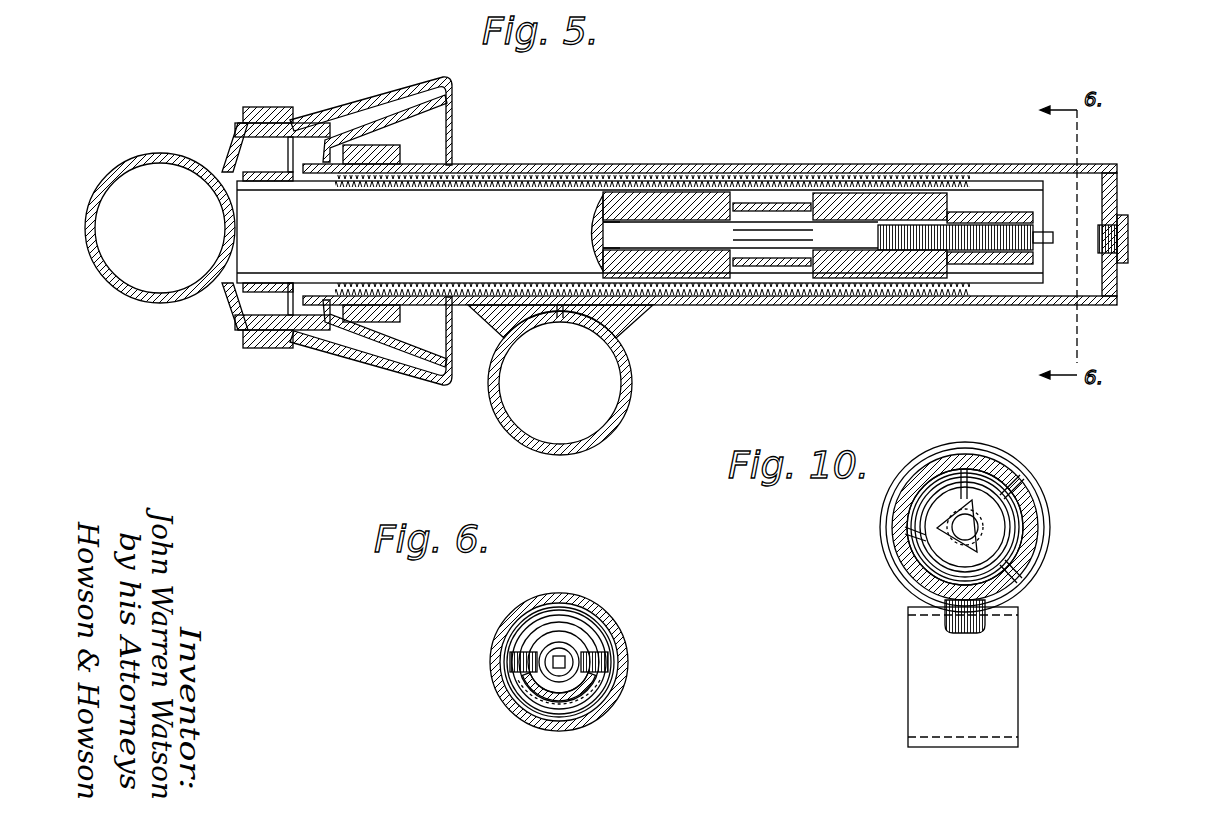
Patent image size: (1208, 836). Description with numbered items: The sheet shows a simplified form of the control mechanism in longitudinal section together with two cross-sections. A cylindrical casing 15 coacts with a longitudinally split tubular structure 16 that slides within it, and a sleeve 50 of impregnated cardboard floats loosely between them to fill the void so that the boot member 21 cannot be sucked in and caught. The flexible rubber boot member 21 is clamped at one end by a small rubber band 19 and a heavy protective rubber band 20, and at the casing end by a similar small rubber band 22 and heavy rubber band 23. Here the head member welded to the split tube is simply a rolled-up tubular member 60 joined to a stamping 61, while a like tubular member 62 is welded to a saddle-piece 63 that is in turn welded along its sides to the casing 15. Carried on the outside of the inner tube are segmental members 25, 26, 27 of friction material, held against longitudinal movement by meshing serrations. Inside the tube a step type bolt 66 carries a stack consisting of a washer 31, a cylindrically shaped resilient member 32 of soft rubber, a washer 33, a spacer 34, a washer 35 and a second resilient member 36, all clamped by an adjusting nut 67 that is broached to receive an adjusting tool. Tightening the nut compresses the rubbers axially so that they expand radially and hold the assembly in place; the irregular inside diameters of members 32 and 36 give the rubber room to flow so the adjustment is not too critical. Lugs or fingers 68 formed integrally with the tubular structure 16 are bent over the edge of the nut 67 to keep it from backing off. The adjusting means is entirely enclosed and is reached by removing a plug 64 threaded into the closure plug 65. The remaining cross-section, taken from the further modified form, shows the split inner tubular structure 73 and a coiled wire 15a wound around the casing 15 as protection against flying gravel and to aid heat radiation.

In FIG. 5, the cylindrical casing 15 is at (731, 164).
In FIG. 6, the cylindrical casing 15 is at (613, 612).
In FIG. 10, the cylindrical casing 15 is at (955, 458).
In FIG. 10, the coiled wire 15a is at (1016, 469).
In FIG. 5, the longitudinally split tubular structure 16 is at (430, 190).
In FIG. 6, the longitudinally split tubular structure 16 is at (522, 633).
In FIG. 5, the rubber band 19 is at (262, 107).
In FIG. 5, the rubber band 20 is at (281, 110).
In FIG. 5, the boot member 21 is at (401, 78).
In FIG. 5, the rubber band 22 is at (352, 332).
In FIG. 5, the rubber band 23 is at (380, 348).
In FIG. 6, the segmental member 25 is at (519, 645).
In FIG. 10, the segmental member 25 is at (935, 542).
In FIG. 5, the segmental member 26 is at (813, 185).
In FIG. 6, the segmental member 26 is at (618, 650).
In FIG. 10, the segmental member 26 is at (975, 470).
In FIG. 5, the segmental member 27 is at (803, 296).
In FIG. 6, the segmental member 27 is at (573, 700).
In FIG. 10, the segmental member 27 is at (1032, 565).
In FIG. 5, the washer 31 is at (958, 212).
In FIG. 6, the washer 31 is at (545, 697).
In FIG. 5, the cylindrically shaped resilient member 32 is at (890, 194).
In FIG. 6, the cylindrically shaped resilient member 32 is at (556, 705).
In FIG. 5, the washer 33 is at (790, 200).
In FIG. 5, the spacer 34 is at (796, 258).
In FIG. 10, the spacer 34 is at (940, 505).
In FIG. 5, the washer 35 is at (735, 225).
In FIG. 5, the second cylindrically shaped resilient member 36 is at (655, 200).
In FIG. 10, the second cylindrically shaped resilient member 36 is at (937, 470).
In FIG. 5, the sleeve 50 is at (505, 164).
In FIG. 5, the rolled-up tubular member 60 is at (117, 180).
In FIG. 10, the rolled-up tubular member 60 is at (986, 525).
In FIG. 5, the stamping 61 is at (237, 135).
In FIG. 5, the tubular member 62 is at (633, 388).
In FIG. 10, the tubular member 62 is at (988, 728).
In FIG. 5, the saddle-piece 63 is at (622, 330).
In FIG. 10, the saddle-piece 63 is at (1002, 625).
In FIG. 5, the plug 64 is at (1128, 236).
In FIG. 5, the closure plug 65 is at (1117, 290).
In FIG. 5, the step type bolt 66 is at (592, 228).
In FIG. 6, the step type bolt 66 is at (566, 652).
In FIG. 5, the adjusting nut 67 is at (1000, 225).
In FIG. 6, the adjusting nut 67 is at (553, 645).
In FIG. 5, the lugs or fingers 68 is at (1053, 237).
In FIG. 6, the lugs or fingers 68 is at (622, 670).
In FIG. 10, the inner tubular structure 73 is at (1028, 495).